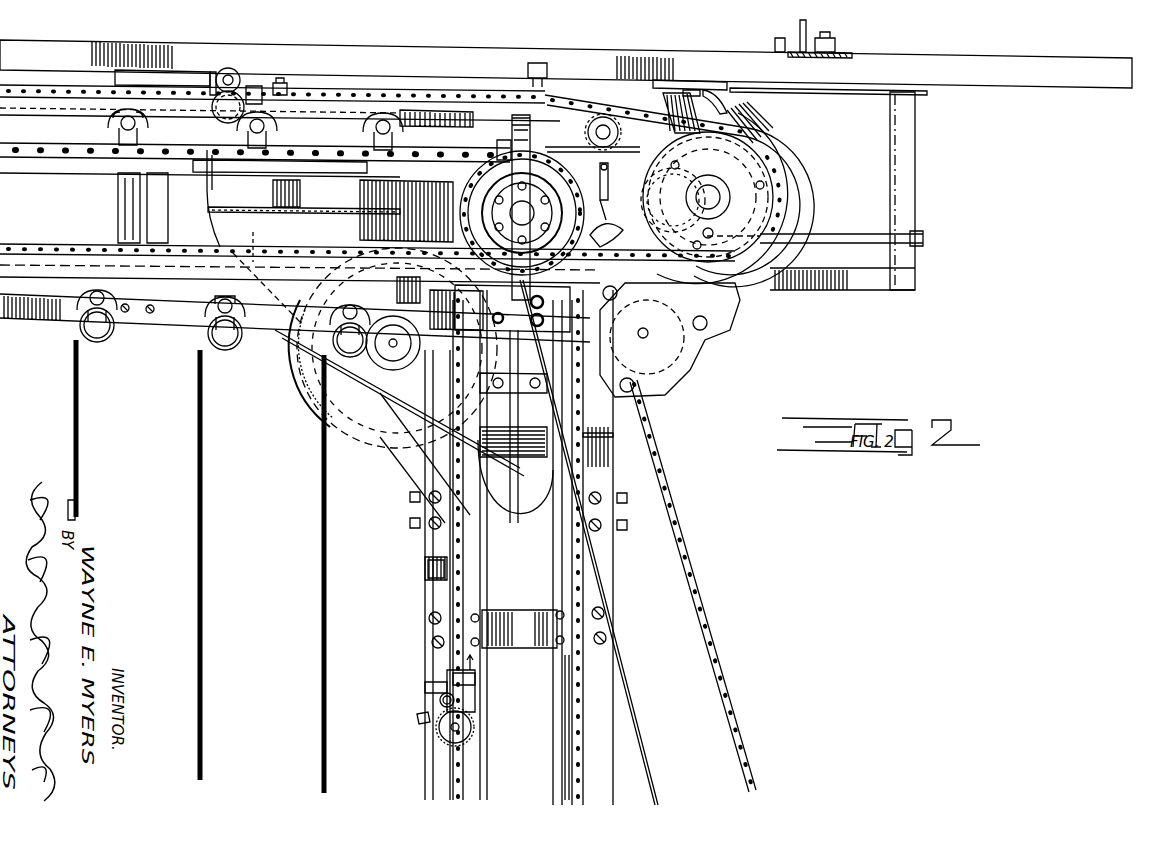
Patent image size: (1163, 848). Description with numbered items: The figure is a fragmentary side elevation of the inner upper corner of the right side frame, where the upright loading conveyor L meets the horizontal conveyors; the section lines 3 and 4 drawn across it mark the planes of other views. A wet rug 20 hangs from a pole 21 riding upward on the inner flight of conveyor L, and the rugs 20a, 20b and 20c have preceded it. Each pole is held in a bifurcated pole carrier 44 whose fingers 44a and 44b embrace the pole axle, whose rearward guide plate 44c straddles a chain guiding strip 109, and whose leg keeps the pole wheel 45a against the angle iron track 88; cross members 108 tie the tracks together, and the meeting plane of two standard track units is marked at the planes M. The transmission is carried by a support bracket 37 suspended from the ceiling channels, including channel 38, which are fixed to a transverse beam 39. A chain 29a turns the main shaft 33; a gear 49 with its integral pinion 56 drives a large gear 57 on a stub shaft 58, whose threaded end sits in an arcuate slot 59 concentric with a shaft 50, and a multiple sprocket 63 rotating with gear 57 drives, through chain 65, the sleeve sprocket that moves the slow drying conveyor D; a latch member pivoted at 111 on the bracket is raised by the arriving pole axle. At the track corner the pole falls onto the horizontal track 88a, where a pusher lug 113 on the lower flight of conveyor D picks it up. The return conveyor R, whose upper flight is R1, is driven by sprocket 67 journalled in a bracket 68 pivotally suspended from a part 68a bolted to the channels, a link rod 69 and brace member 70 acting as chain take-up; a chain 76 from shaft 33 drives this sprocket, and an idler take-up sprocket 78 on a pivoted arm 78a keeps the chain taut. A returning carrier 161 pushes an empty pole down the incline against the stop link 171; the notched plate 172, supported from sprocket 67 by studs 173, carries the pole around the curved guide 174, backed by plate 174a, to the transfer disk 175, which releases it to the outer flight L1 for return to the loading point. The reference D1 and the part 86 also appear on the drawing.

The channel 38 is at (566, 67).
The transverse beam 39 is at (822, 38).
The upper flight of return conveyor R1 is at (470, 95).
The carrier 161 is at (258, 58).
The stop link 171 is at (283, 79).
The pusher lug 113 is at (250, 308).
The horizontal drying conveyor D is at (210, 170).
The chain 65 is at (358, 222).
The return conveyor R is at (93, 244).
The dashed reference line D1 is at (266, 273).
The horizontal track 88a is at (175, 333).
The rug 20c is at (82, 437).
The slot 59 is at (245, 336).
The rug 20b is at (204, 468).
The rug 20a is at (342, 565).
The multiple sprocket 63 is at (320, 406).
The large gear 57 is at (360, 428).
The stub shaft 58 is at (393, 334).
The loading conveyor L is at (462, 547).
The main shaft 33 is at (482, 176).
The bracket 86 is at (503, 150).
The chain 76 is at (530, 160).
The pivot 111 is at (536, 304).
The shaft 50 is at (513, 395).
The pinion 56 is at (513, 417).
The gear 49 is at (462, 455).
The transmission support bracket 37 is at (515, 477).
The meeting planes M is at (622, 460).
The wet rug 20 is at (425, 770).
The angle iron track 88 is at (628, 579).
The outside flight of loading conveyor L1 is at (596, 438).
The chain guiding strip 109 is at (556, 560).
The cross member 108 is at (512, 620).
The guide plate 44c is at (478, 679).
The carrier finger 44a is at (430, 683).
The pole carrier 44 is at (470, 694).
The pole wheel 45a is at (440, 700).
The carrier finger 44b is at (417, 717).
The pole 21 is at (441, 745).
The idler take-up sprocket 78 is at (594, 118).
The supporting arm 78a is at (650, 115).
The notched plate 172 is at (650, 214).
The curved guide 174 is at (797, 162).
The drive sprocket 67 is at (788, 148).
The studs 173 is at (705, 199).
The link rod 69 is at (838, 238).
The brace member 70 is at (913, 143).
The supporting bracket 68 is at (730, 102).
The suspension part 68a is at (706, 82).
The back plate 174a is at (790, 115).
The transfer disk 175 is at (668, 382).
The chain 29a is at (678, 513).
The section line 3 is at (596, 552).
The section line 4 is at (1162, 58).